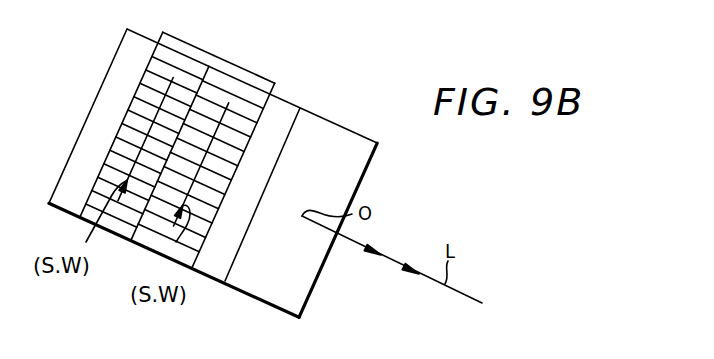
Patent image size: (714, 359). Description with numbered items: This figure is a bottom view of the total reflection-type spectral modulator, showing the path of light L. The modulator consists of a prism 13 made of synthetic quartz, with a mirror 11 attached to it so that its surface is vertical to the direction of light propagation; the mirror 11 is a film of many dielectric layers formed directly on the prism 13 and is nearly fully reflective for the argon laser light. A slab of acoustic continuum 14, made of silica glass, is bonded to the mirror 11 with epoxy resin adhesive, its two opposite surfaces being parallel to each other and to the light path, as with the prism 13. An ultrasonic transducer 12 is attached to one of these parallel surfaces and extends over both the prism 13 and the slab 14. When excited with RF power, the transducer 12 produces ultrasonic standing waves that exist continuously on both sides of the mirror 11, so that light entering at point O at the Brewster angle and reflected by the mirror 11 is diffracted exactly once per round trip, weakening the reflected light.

The mirror 11 is at (139, 216).
The ultrasonic transducer 12 is at (245, 70).
The prism 13 is at (288, 110).
The slab of acoustic continuum 14 is at (87, 201).